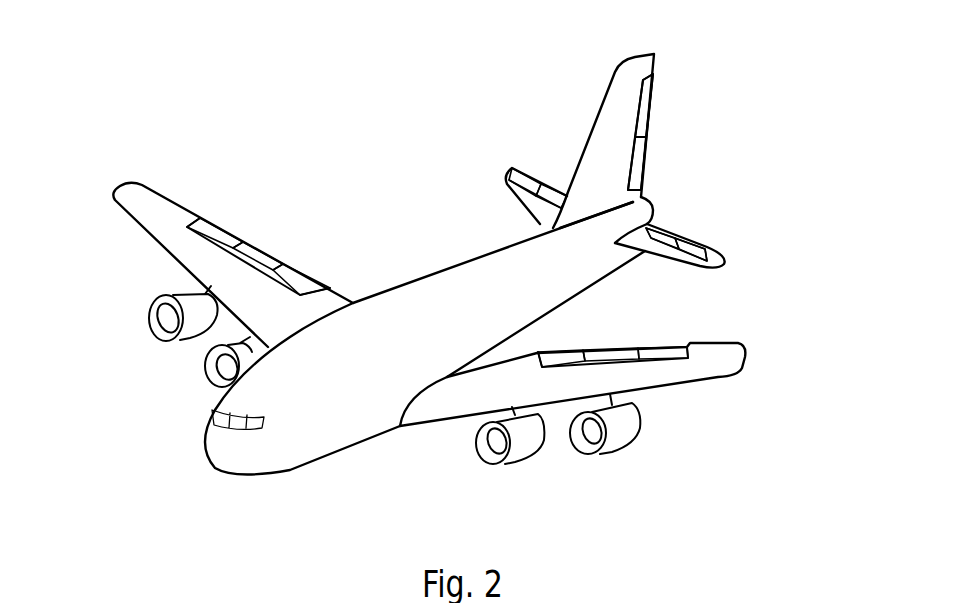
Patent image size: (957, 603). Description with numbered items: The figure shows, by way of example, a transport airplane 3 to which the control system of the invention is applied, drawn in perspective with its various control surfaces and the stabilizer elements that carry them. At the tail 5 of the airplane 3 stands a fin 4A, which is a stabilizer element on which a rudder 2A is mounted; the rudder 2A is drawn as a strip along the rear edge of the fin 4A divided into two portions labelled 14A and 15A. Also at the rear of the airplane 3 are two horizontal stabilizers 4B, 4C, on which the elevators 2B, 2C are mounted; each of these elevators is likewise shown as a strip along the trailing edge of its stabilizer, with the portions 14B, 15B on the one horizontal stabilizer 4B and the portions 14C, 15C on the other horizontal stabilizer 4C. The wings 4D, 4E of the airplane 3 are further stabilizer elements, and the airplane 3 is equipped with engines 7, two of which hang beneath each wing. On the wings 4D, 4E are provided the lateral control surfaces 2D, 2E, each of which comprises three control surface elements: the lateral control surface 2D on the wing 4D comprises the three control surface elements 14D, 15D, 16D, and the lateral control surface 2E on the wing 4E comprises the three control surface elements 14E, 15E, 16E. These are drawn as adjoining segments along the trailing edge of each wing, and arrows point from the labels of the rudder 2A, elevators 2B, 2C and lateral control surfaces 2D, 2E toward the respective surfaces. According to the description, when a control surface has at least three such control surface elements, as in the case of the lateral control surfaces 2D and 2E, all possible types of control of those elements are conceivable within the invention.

The transport airplane 3 is at (333, 143).
The rudder 2A is at (690, 85).
The elevator 2B is at (488, 191).
The elevator 2C is at (805, 157).
The lateral control surface 2D is at (210, 266).
The lateral control surface 2E is at (547, 386).
The fin 4A is at (600, 113).
The horizontal stabilizer 4B is at (520, 210).
The horizontal stabilizer 4C is at (630, 257).
The wing 4D is at (197, 257).
The wing 4E is at (670, 388).
The tail 5 is at (643, 213).
The engines 7 is at (160, 341).
The rudder segment 14A is at (655, 104).
The rudder segment 15A is at (645, 153).
The left elevator segment 14B is at (555, 188).
The left elevator segment 15B is at (516, 170).
The right elevator segment 14C is at (667, 233).
The right elevator segment 15C is at (703, 245).
The control surface element 14D is at (303, 280).
The control surface element 15D is at (260, 257).
The control surface element 16D is at (217, 224).
The control surface element 14E is at (562, 360).
The control surface element 15E is at (625, 350).
The control surface element 16E is at (683, 348).